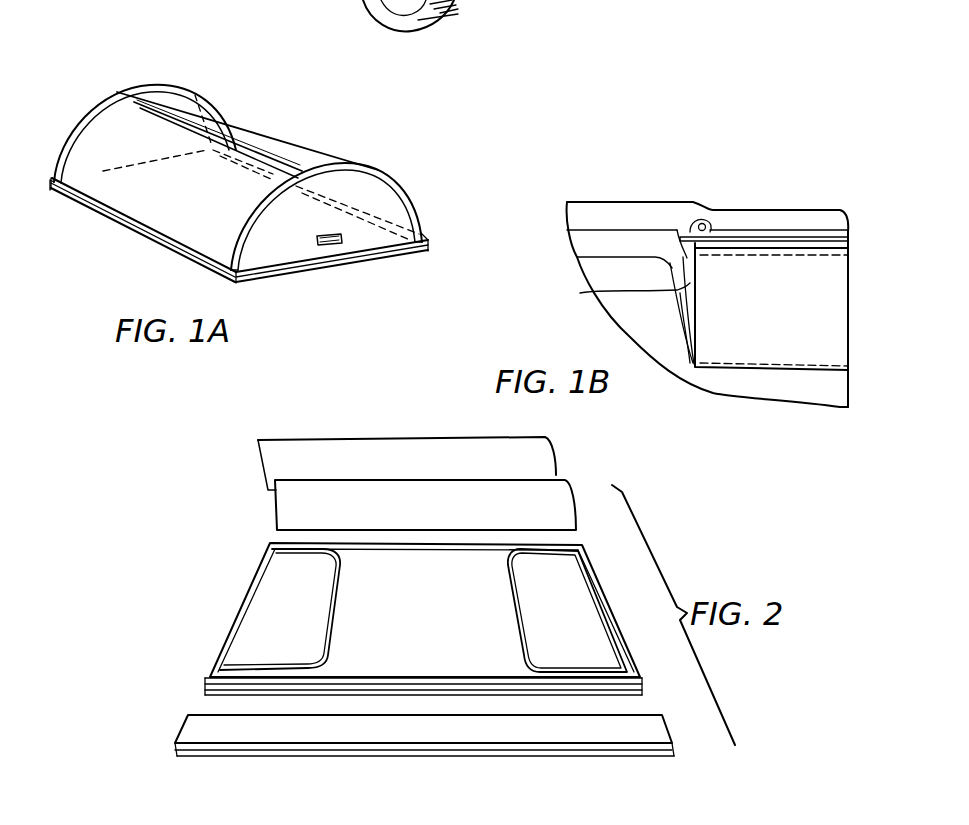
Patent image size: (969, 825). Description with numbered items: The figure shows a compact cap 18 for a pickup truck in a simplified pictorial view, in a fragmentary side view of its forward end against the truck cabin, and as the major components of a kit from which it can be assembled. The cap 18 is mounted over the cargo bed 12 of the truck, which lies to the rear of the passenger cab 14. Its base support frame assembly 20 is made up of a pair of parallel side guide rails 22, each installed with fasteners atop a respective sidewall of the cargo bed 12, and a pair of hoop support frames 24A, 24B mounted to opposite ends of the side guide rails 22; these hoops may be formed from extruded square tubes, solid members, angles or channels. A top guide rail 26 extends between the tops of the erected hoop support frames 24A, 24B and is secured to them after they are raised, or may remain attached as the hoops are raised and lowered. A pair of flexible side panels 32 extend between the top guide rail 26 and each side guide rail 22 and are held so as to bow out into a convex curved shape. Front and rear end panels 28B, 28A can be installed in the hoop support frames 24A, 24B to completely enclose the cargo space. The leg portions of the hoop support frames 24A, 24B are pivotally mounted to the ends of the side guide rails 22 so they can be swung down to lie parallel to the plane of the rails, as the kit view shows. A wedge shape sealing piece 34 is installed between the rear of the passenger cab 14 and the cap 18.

In FIG. 1A, the cargo bed 12 is at (500, 0).
In FIG. 1B, the passenger cab 14 is at (697, 320).
In FIG. 1A, the cap 18 is at (72, 102).
In FIG. 1A, the base support frame assembly 20 is at (288, 261).
In FIG. 2, the base support frame assembly 20 is at (627, 640).
In FIG. 1A, the side guide rails 22 is at (120, 215).
In FIG. 2, the side guide rails 22 is at (360, 545).
In FIG. 1A, the hoop support frame 24A is at (310, 172).
In FIG. 2, the hoop support frame 24A is at (503, 583).
In FIG. 1A, the hoop support frame 24B is at (115, 93).
In FIG. 1B, the hoop support frame 24B is at (615, 310).
In FIG. 2, the hoop support frame 24B is at (332, 640).
In FIG. 1A, the top guide rail 26 is at (218, 118).
In FIG. 2, the top guide rail 26 is at (537, 757).
In FIG. 1A, the rear end panel 28A is at (326, 230).
In FIG. 2, the rear end panel 28A is at (567, 588).
In FIG. 2, the front end panel 28B is at (263, 603).
In FIG. 1A, the flexible side panels 32 is at (244, 118).
In FIG. 2, the flexible side panels 32 is at (288, 510).
In FIG. 1B, the wedge shape sealing piece 34 is at (677, 230).